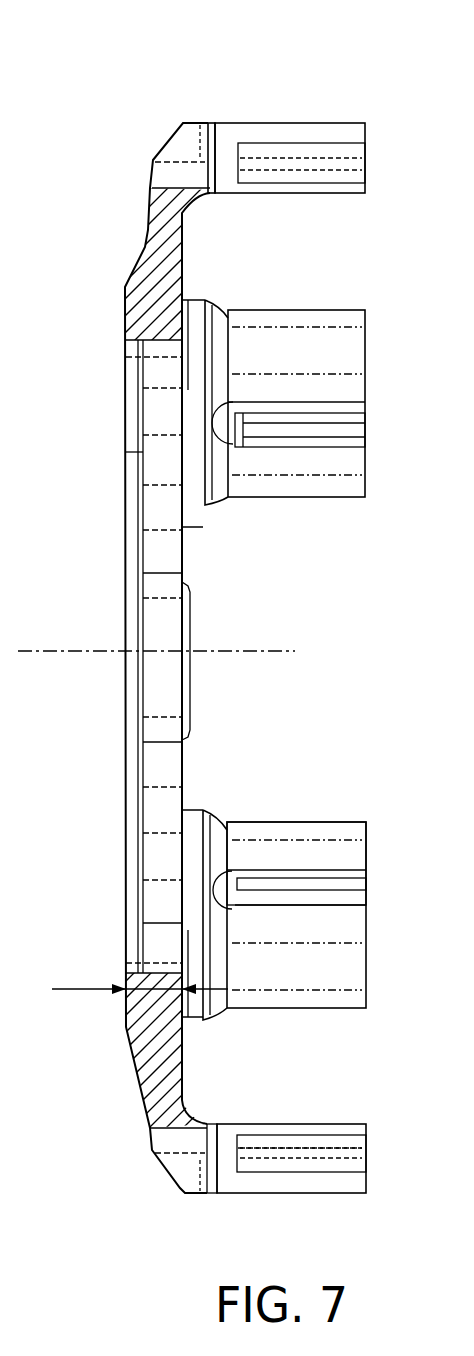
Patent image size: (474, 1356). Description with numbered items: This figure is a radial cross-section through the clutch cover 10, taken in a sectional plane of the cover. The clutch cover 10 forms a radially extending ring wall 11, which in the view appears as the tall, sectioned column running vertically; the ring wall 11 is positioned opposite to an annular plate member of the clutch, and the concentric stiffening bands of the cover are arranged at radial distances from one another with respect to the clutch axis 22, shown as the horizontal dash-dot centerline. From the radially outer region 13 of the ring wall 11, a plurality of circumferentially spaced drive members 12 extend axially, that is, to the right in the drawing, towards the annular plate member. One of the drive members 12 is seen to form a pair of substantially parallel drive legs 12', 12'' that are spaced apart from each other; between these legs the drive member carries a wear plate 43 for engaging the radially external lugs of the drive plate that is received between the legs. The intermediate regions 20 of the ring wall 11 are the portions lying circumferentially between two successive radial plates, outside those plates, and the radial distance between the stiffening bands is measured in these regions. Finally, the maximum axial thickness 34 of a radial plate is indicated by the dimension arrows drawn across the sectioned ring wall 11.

The clutch cover 10 is at (326, 92).
The ring wall 11 is at (128, 435).
The drive member 12 is at (330, 778).
The drive leg 12' is at (338, 915).
The drive leg 12'' is at (350, 855).
The radially outer region 13 is at (213, 102).
The intermediate region 20 is at (328, 260).
The clutch axis 22 is at (296, 657).
The maximum axial thickness 34 is at (78, 989).
The wear plate 43 is at (303, 1147).